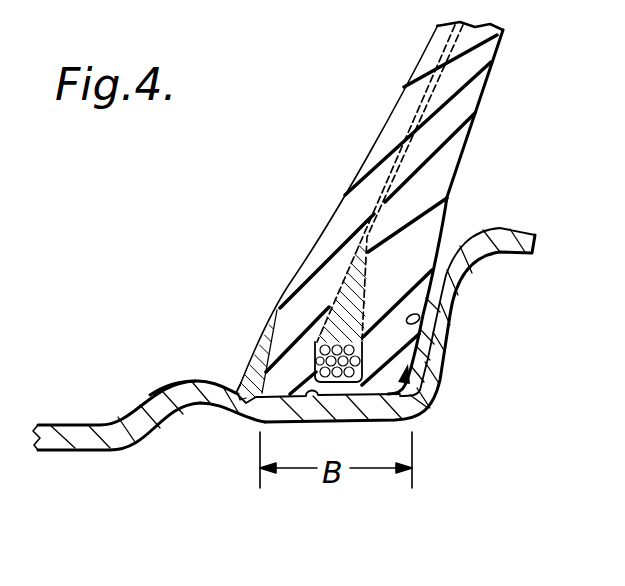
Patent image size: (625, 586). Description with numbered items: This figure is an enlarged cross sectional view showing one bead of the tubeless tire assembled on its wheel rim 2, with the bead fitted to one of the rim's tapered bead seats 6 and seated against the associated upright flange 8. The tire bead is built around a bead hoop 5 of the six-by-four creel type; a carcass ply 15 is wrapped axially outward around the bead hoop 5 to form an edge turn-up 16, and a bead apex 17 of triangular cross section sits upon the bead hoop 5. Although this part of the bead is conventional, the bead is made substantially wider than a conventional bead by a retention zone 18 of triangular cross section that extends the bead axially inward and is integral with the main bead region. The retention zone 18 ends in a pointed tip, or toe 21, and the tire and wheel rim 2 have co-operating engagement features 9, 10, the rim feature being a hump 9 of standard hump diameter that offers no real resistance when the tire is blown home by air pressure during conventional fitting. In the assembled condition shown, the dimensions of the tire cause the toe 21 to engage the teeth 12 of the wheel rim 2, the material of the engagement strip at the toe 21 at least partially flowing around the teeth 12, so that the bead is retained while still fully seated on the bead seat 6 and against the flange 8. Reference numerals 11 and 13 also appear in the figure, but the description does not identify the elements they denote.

The wheel rim 2 is at (75, 442).
The bead hoop 5 is at (362, 367).
The bead seat 6 is at (328, 420).
The upright flange 8 is at (420, 323).
The hump 9 is at (152, 395).
The co-operating engagement feature 10 is at (223, 373).
The bottom corner portion 11 is at (418, 398).
The teeth 12 is at (232, 390).
The lower junction 13 is at (244, 423).
The carcass ply 15 is at (417, 117).
The edge turn-up 16 is at (367, 299).
The bead apex 17 is at (319, 246).
The retention zone 18 is at (265, 330).
The pointed tip (toe) 21 is at (243, 410).